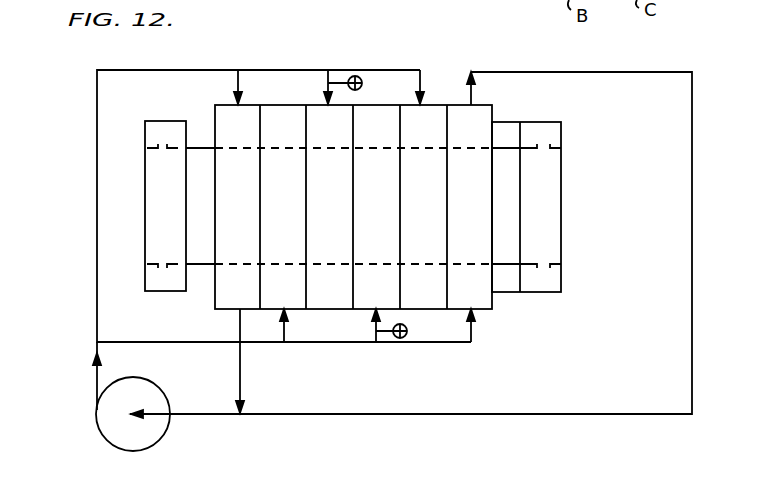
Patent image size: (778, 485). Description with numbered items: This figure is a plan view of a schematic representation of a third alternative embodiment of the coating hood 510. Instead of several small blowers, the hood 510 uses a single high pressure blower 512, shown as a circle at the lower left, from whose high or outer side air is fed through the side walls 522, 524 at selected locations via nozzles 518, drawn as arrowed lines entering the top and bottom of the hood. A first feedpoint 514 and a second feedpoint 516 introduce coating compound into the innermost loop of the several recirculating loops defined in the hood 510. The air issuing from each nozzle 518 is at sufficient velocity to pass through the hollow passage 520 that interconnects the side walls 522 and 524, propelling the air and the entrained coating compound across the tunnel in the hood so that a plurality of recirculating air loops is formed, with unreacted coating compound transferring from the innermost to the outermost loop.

The coating hood 510 is at (80, 229).
The high pressure blower 512 is at (157, 433).
The first feedpoint 514 is at (408, 334).
The second feedpoint 516 is at (362, 86).
The nozzles 518 is at (237, 80).
The hollow passage 520 is at (220, 160).
The side wall 522 is at (243, 108).
The side wall 524 is at (494, 300).